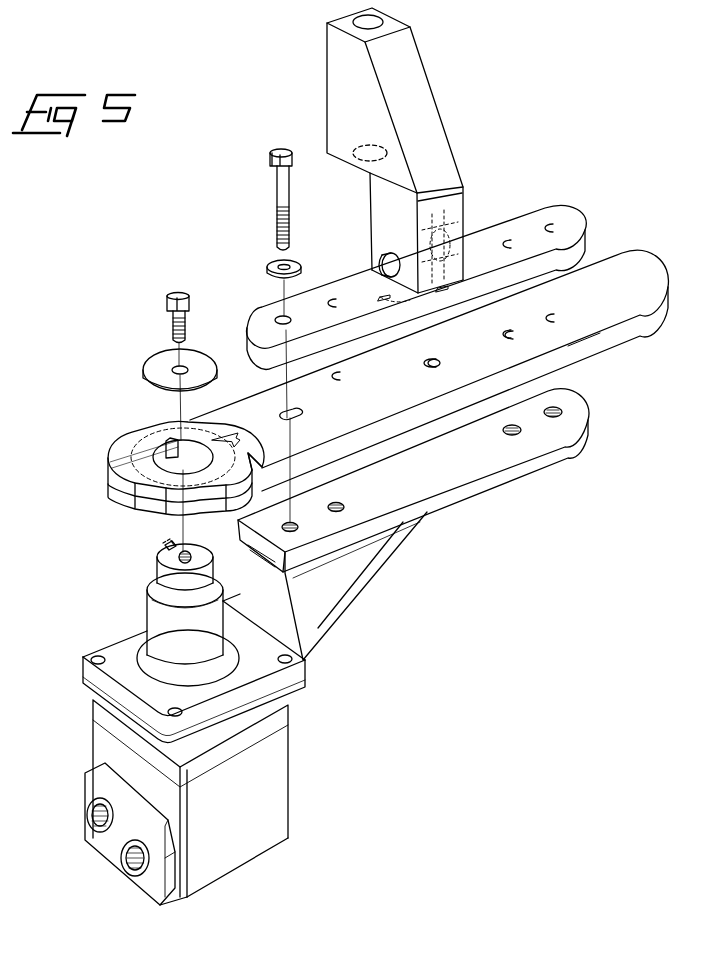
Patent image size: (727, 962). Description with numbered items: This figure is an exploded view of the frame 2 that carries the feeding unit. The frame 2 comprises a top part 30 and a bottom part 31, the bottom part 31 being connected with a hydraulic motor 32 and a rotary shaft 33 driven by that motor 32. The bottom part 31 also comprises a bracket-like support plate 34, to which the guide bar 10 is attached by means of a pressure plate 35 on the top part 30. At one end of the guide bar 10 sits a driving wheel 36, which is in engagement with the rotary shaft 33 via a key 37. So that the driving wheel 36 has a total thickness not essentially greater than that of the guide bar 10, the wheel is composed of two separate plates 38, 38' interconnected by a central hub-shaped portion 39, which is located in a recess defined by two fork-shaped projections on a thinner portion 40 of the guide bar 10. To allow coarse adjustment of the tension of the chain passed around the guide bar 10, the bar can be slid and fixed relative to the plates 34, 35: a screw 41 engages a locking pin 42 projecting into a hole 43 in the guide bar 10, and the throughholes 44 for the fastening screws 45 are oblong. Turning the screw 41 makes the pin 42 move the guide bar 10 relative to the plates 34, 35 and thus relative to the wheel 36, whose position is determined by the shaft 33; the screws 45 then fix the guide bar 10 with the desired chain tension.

The frame 2 is at (582, 449).
The guide bar 10 is at (395, 432).
The top part 30 is at (466, 201).
The bottom part 31 is at (369, 594).
The hydraulic motor 32 is at (280, 797).
The rotary shaft 33 is at (213, 608).
The bracket-like support plate 34 is at (480, 481).
The pressure plate 35 is at (549, 212).
The driving wheel 36 is at (124, 516).
The key 37 is at (162, 545).
The plate 38 is at (155, 455).
The plate 38' is at (144, 488).
The central hub-shaped portion 39 is at (197, 448).
The thinner portion 40 is at (258, 458).
The screw 41 is at (387, 251).
The locking pin 42 is at (428, 240).
The hole 43 is at (430, 362).
The throughholes 44 is at (557, 316).
The fastening screws 45 is at (275, 190).